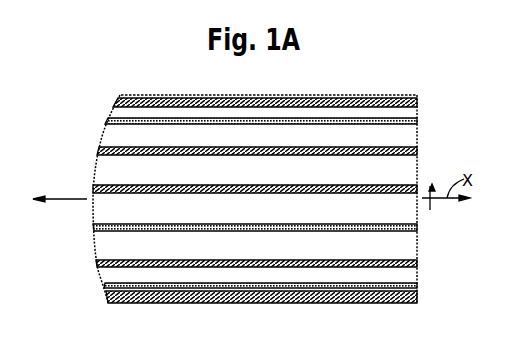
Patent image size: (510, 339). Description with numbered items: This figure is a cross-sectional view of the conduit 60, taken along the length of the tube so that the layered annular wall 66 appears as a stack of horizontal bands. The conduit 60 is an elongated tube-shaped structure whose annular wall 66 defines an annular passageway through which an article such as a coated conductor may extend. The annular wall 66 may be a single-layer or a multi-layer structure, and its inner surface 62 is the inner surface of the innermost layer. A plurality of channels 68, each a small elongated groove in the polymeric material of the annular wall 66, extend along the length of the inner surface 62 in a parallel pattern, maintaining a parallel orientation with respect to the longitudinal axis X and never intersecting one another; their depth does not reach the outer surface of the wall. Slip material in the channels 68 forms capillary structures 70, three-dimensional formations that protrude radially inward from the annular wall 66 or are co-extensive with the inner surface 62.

The conduit 60 is at (100, 139).
The inner surface 62 is at (408, 244).
The annular wall 66 is at (104, 173).
The channels 68 is at (400, 266).
The capillary structure 70 is at (388, 124).